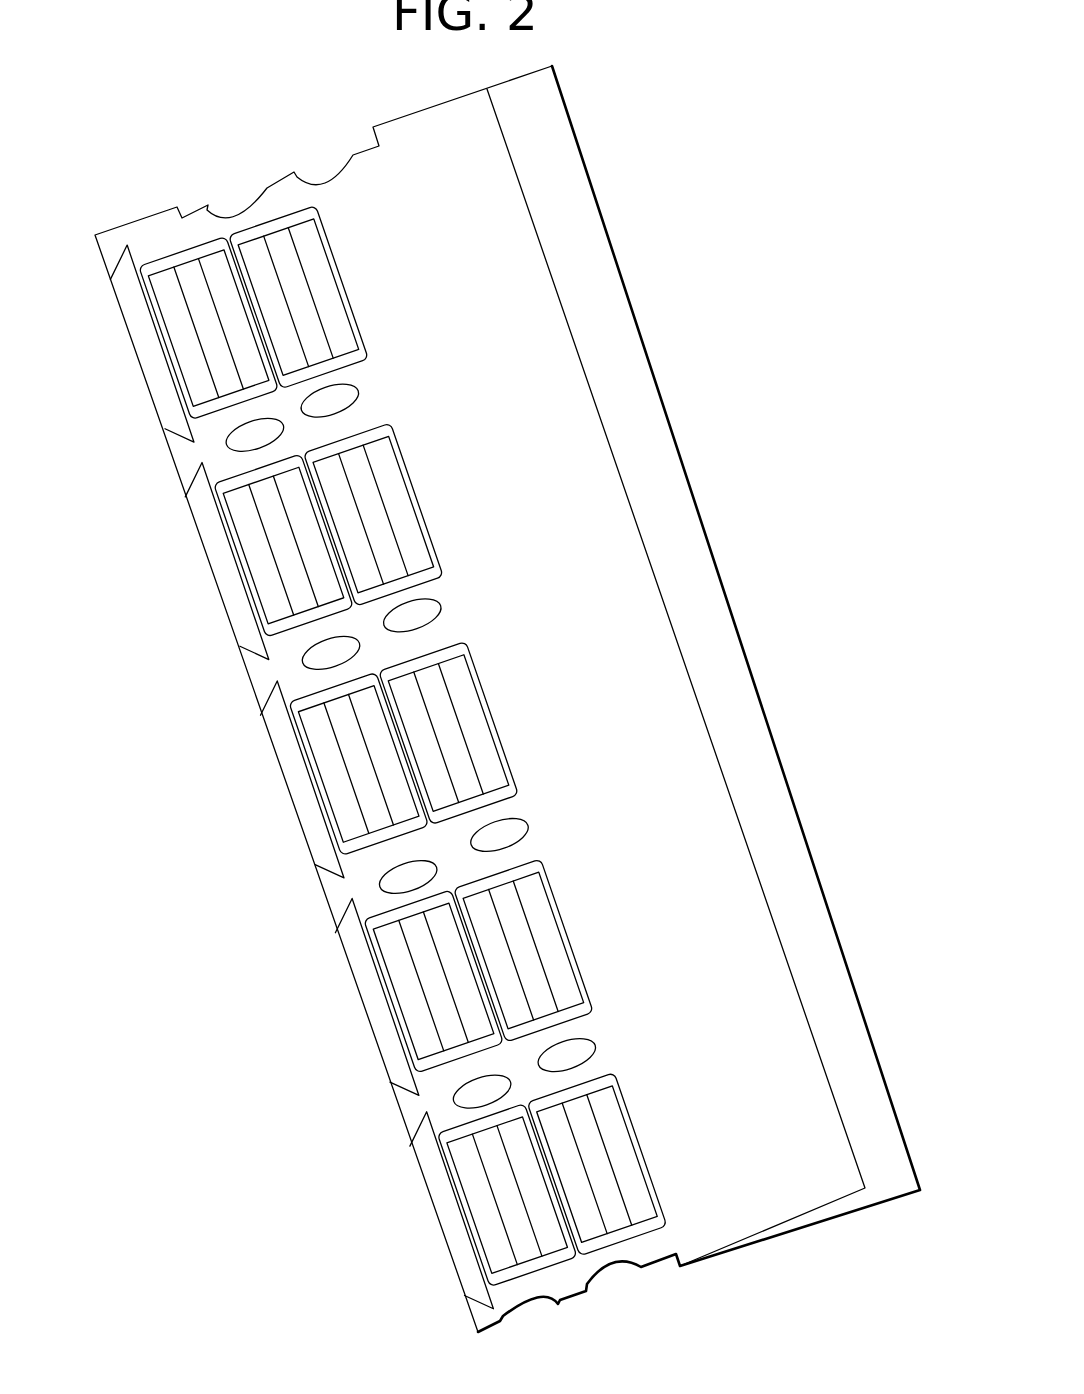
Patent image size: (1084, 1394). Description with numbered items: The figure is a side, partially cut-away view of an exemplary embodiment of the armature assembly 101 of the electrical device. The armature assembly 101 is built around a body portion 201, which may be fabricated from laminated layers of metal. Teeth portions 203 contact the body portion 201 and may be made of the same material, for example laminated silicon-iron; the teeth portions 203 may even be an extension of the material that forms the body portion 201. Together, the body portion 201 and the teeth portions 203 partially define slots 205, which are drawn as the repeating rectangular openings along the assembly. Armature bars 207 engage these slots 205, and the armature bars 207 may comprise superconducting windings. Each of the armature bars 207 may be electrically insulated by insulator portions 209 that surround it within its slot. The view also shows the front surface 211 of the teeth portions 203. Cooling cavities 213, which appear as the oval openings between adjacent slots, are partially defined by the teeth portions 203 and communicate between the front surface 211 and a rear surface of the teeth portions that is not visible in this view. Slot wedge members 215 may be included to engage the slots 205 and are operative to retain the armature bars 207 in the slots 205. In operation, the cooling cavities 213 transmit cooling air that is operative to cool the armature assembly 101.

The armature assembly 101 is at (700, 242).
The body portion 201 is at (507, 372).
The teeth portions 203 is at (367, 640).
The slots 205 is at (345, 291).
The armature bars 207 is at (530, 978).
The insulator portions 209 is at (487, 712).
The front surface 211 is at (478, 866).
The cooling cavities 213 is at (497, 838).
The slot wedge members 215 is at (453, 1272).